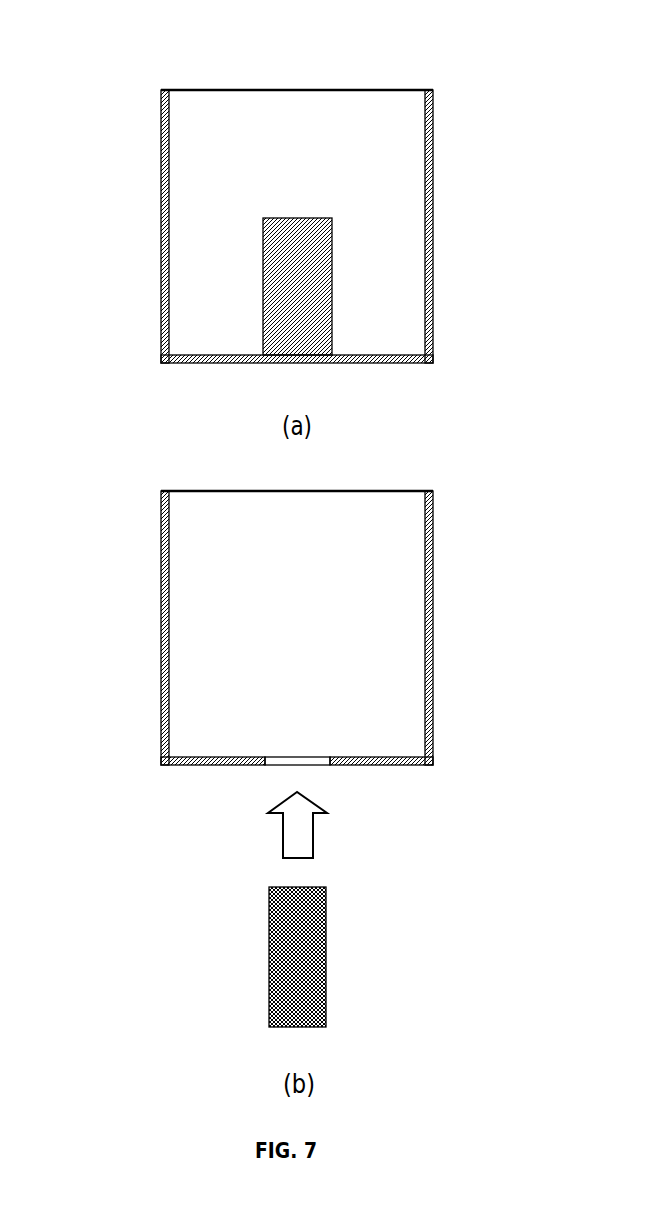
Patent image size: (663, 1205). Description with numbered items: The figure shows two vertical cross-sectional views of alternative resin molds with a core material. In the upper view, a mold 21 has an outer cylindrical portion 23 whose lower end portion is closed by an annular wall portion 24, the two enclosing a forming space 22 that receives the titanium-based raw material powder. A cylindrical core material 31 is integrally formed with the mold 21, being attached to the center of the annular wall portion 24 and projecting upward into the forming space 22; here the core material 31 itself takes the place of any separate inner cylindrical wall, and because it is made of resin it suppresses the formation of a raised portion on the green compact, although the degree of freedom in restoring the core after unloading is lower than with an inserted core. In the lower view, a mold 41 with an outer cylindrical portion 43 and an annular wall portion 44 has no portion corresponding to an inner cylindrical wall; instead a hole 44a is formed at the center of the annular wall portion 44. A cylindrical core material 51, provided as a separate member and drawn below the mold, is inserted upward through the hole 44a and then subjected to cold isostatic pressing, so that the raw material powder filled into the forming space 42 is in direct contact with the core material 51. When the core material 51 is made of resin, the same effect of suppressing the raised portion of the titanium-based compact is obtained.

The mold 21 is at (283, 249).
The forming space 22 is at (410, 341).
The outer cylindrical portion 23 is at (433, 208).
The annular wall portion 24 is at (387, 363).
The core material 31 is at (280, 300).
The mold 41 is at (282, 655).
The forming space 42 is at (410, 741).
The outer cylindrical portion 43 is at (434, 607).
The annular wall portion 44 is at (305, 794).
The hole 44a is at (273, 765).
The core material 51 is at (280, 972).